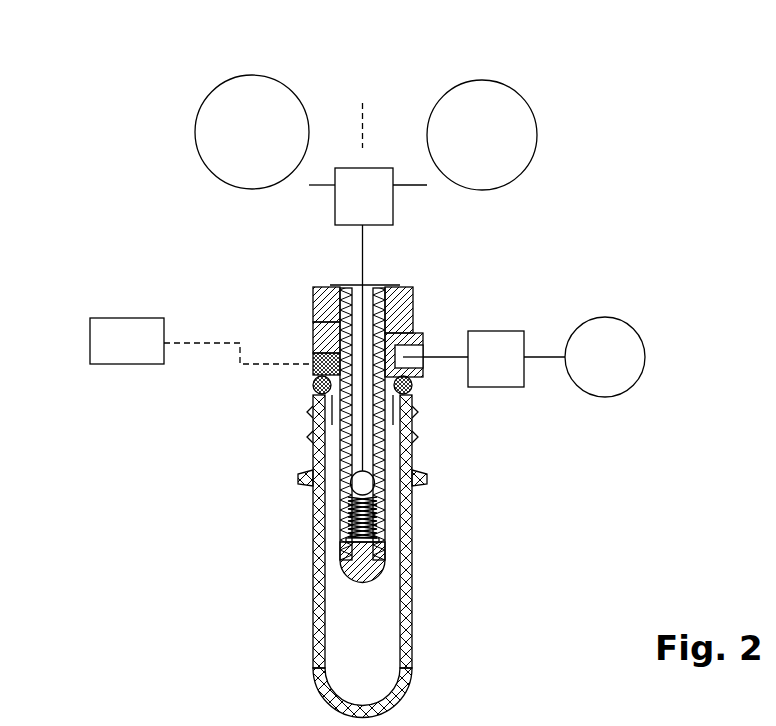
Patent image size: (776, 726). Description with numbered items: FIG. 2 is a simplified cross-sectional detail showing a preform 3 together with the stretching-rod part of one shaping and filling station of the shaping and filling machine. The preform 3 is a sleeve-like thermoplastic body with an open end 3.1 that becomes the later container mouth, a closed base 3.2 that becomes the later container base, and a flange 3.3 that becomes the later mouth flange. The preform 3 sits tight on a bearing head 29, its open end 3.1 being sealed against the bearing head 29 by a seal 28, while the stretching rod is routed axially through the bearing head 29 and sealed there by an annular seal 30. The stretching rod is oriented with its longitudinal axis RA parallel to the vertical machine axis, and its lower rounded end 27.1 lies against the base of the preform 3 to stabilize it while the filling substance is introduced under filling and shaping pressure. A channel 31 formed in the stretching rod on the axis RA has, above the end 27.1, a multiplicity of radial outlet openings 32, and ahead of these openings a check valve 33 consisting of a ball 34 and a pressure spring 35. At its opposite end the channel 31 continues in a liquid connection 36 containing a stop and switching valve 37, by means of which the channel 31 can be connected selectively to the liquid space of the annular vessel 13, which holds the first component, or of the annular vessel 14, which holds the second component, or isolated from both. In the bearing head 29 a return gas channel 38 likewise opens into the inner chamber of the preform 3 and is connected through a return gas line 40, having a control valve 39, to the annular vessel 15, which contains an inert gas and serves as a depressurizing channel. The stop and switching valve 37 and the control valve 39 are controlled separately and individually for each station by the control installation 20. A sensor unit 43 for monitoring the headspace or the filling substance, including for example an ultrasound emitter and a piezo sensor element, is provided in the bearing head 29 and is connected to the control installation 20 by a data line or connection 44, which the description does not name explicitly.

The preform 3 is at (308, 560).
The open end 3.1 is at (313, 400).
The closed base 3.2 is at (388, 710).
The flange 3.3 is at (297, 477).
The annular vessel 13 is at (265, 132).
The annular vessel 14 is at (471, 145).
The annular vessel 15 is at (594, 367).
The control installation 20 is at (115, 351).
The lower rounded end 27.1 is at (380, 568).
The seal 28 is at (312, 383).
The bearing head 29 is at (313, 303).
The annular seal 30 is at (410, 305).
The channel 31 is at (386, 438).
The radial outlet openings 32 is at (380, 510).
The check valve 33 is at (305, 502).
The ball 34 is at (370, 487).
The pressure spring 35 is at (382, 537).
The liquid connection 36 is at (362, 253).
The stop and switching valve 37 is at (351, 192).
The return gas channel 38 is at (312, 352).
The control valve 39 is at (504, 368).
The return gas line 40 is at (551, 355).
The sensor unit 43 is at (312, 357).
The signal line 44 is at (228, 345).
The axis RA is at (364, 138).